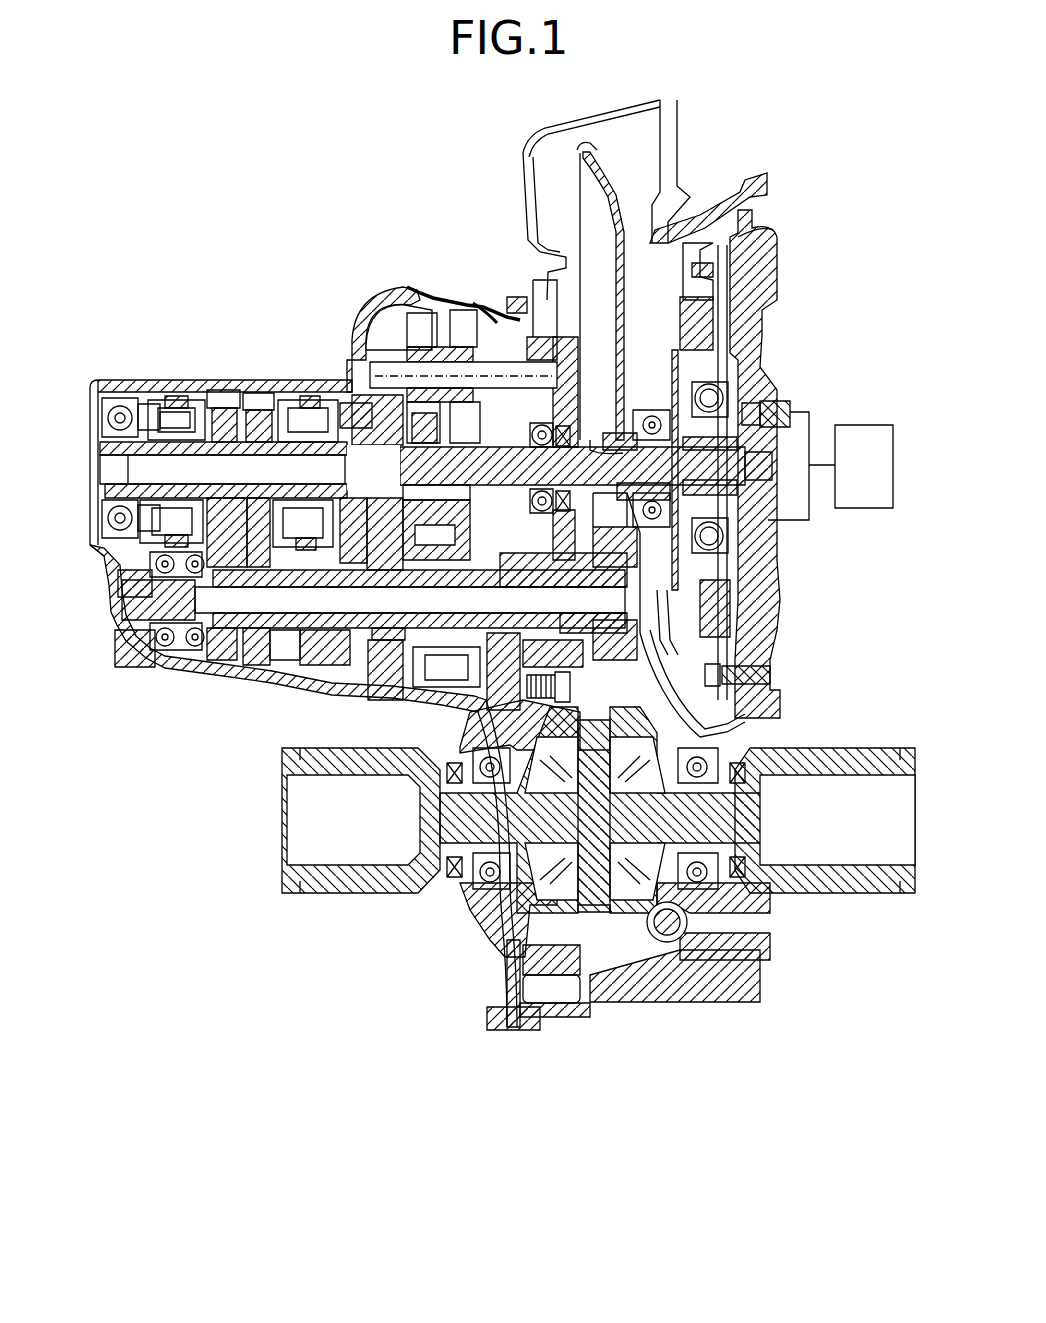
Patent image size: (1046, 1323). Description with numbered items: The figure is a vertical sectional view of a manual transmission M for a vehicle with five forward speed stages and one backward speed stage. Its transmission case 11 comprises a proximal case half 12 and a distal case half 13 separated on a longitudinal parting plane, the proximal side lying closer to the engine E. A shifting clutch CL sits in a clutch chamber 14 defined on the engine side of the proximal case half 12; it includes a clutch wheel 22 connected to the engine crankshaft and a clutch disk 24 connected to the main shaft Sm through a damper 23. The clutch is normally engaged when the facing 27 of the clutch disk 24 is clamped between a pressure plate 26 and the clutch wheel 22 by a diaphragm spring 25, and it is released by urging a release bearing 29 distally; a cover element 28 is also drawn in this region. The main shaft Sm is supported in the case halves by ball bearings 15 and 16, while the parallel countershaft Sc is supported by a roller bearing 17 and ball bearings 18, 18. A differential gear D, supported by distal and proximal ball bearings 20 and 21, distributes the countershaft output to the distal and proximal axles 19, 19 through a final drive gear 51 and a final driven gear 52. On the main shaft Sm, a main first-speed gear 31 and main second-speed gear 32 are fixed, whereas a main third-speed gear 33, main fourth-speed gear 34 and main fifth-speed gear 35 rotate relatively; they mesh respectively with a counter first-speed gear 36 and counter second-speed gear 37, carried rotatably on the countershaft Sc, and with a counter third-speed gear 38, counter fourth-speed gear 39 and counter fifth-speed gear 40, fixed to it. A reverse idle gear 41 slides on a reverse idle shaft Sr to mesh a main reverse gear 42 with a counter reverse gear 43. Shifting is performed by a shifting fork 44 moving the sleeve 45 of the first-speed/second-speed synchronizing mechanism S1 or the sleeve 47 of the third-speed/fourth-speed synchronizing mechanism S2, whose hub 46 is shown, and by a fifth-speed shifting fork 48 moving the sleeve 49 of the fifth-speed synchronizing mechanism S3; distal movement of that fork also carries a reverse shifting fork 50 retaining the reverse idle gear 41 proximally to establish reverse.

The manual transmission M is at (355, 252).
The transmission case 11 is at (607, 1087).
The proximal case half 12 is at (577, 1017).
The distal case half 13 is at (512, 1027).
The clutch chamber 14 is at (668, 285).
The ball bearing 15 is at (548, 515).
The ball bearing 16 is at (114, 410).
The roller bearing 17 is at (608, 650).
The ball bearings 18 is at (195, 628).
The axles 19 is at (390, 882).
The distal ball bearing 20 is at (712, 885).
The proximal ball bearing 21 is at (490, 876).
The clutch wheel 22 is at (756, 630).
The damper 23 is at (722, 384).
The clutch disk 24 is at (758, 604).
The diaphragm spring 25 is at (640, 414).
The pressure plate 26 is at (722, 684).
The facing 27 is at (745, 243).
The cover plate 28 is at (617, 232).
The release bearing 29 is at (710, 534).
The main first-speed gear 31 is at (516, 432).
The main second-speed gear 32 is at (386, 434).
The main third-speed gear 33 is at (345, 405).
The main fourth-speed gear 34 is at (258, 396).
The main fifth-speed gear 35 is at (213, 392).
The counter first-speed gear 36 is at (482, 703).
The counter second-speed gear 37 is at (368, 690).
The counter third-speed gear 38 is at (306, 680).
The counter fourth-speed gear 39 is at (255, 667).
The counter fifth-speed gear 40 is at (220, 658).
The reverse idle gear 41 is at (386, 310).
The main reverse gear 42 is at (405, 498).
The counter reverse gear 43 is at (436, 477).
The shifting fork 44 is at (378, 562).
The sleeve 45 is at (448, 670).
The synchronizer hub 46 is at (300, 548).
The sleeve 47 is at (318, 550).
The fifth-speed shifting fork 48 is at (178, 406).
The sleeve 49 is at (222, 467).
The reverse shifting fork 50 is at (362, 330).
The final drive gear 51 is at (533, 562).
The final driven gear 52 is at (530, 990).
The shifting clutch CL is at (776, 335).
The differential gear D is at (643, 726).
The engine E is at (876, 484).
The main shaft Sm is at (512, 485).
The countershaft Sc is at (373, 599).
The reverse idle shaft Sr is at (350, 352).
The first-speed/second-speed synchronizing mechanism S1 is at (430, 692).
The third-speed/fourth-speed synchronizing mechanism S2 is at (288, 392).
The fifth-speed synchronizing mechanism S3 is at (178, 392).